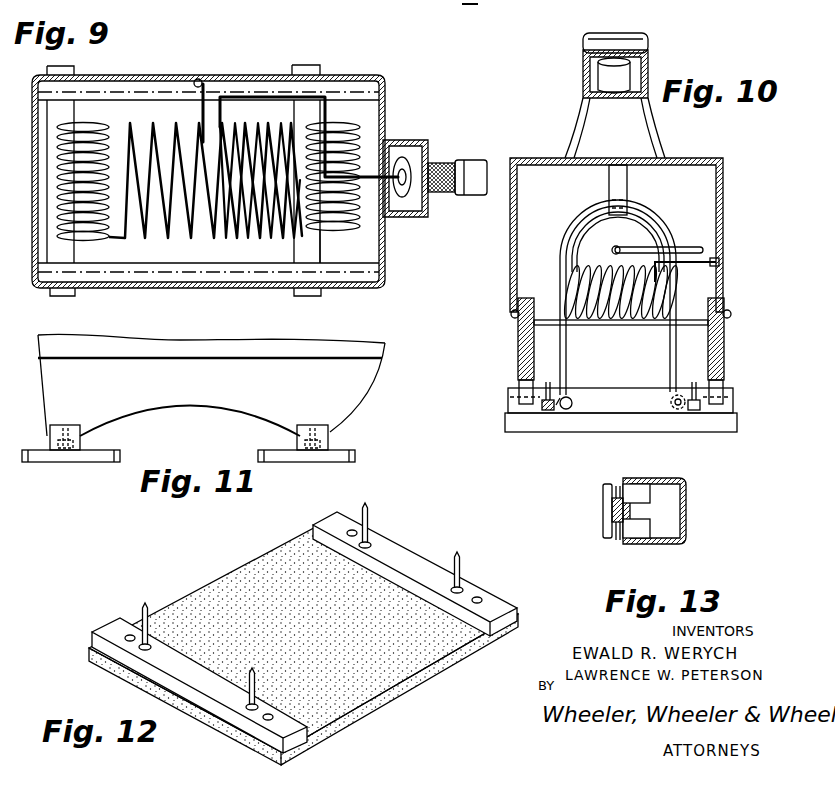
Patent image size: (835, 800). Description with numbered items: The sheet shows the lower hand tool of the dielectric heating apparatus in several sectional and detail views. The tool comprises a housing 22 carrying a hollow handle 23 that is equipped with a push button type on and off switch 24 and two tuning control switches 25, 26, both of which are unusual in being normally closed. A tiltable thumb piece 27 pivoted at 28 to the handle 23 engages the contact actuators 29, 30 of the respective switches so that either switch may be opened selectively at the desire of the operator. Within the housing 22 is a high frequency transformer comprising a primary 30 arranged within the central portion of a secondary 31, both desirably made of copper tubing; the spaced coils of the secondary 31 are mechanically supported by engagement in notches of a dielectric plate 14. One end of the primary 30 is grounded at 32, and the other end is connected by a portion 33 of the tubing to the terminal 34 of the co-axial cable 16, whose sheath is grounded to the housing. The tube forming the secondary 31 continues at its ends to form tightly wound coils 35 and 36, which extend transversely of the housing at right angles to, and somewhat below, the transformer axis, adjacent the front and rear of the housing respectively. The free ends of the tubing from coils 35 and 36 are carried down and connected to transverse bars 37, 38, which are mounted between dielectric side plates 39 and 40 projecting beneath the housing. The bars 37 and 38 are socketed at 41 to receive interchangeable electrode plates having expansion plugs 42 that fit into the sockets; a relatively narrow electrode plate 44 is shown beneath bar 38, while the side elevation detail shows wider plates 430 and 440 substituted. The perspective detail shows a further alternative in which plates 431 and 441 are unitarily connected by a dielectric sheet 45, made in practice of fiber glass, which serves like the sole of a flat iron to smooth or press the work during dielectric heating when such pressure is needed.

In FIG. 10, the dielectric plate 14 is at (626, 189).
In FIG. 9, the co-axial cable 16 is at (457, 191).
In FIG. 10, the housing 22 is at (724, 174).
In FIG. 11, the housing 22 is at (378, 348).
In FIG. 10, the hollow handle 23 is at (640, 37).
In FIG. 13, the hollow handle 23 is at (688, 504).
In FIG. 10, the push button type on and off switch 24 is at (616, 101).
In FIG. 13, the tuning control switch 25 is at (642, 495).
In FIG. 13, the tuning control switch 26 is at (660, 541).
In FIG. 13, the tiltable thumb piece 27 is at (604, 494).
In FIG. 13, the pivot 28 is at (612, 511).
In FIG. 13, the contact actuator 29 is at (619, 485).
In FIG. 9, the primary 30 is at (206, 240).
In FIG. 10, the primary 30 is at (660, 238).
In FIG. 13, the primary 30 is at (617, 541).
In FIG. 9, the secondary 31 is at (248, 238).
In FIG. 10, the secondary 31 is at (656, 216).
In FIG. 9, the ground 32 is at (200, 80).
In FIG. 10, the ground 32 is at (722, 262).
In FIG. 9, the tubing portion 33 is at (329, 99).
In FIG. 10, the tubing portion 33 is at (612, 251).
In FIG. 9, the terminal 34 is at (403, 158).
In FIG. 9, the tightly wound coil 35 is at (100, 126).
In FIG. 9, the tightly wound coil 36 is at (338, 229).
In FIG. 10, the tightly wound coil 36 is at (578, 290).
In FIG. 9, the bar 37 is at (76, 293).
In FIG. 11, the bar 37 is at (82, 445).
In FIG. 9, the bar 38 is at (321, 293).
In FIG. 10, the bar 38 is at (642, 402).
In FIG. 11, the bar 38 is at (326, 440).
In FIG. 10, the dielectric side plate 39 is at (517, 362).
In FIG. 11, the dielectric side plate 39 is at (355, 388).
In FIG. 10, the dielectric side plate 40 is at (726, 360).
In FIG. 10, the socket 41 is at (567, 397).
In FIG. 10, the expansion plug 42 is at (696, 383).
In FIG. 11, the expansion plug 42 is at (308, 426).
In FIG. 12, the expansion plug 42 is at (465, 565).
In FIG. 10, the electrode plate 44 is at (738, 421).
In FIG. 12, the dielectric sheet 45 is at (465, 652).
In FIG. 11, the wider plate 430 is at (94, 463).
In FIG. 11, the wider plate 440 is at (338, 463).
In FIG. 12, the plate 431 is at (160, 663).
In FIG. 12, the plate 441 is at (410, 561).